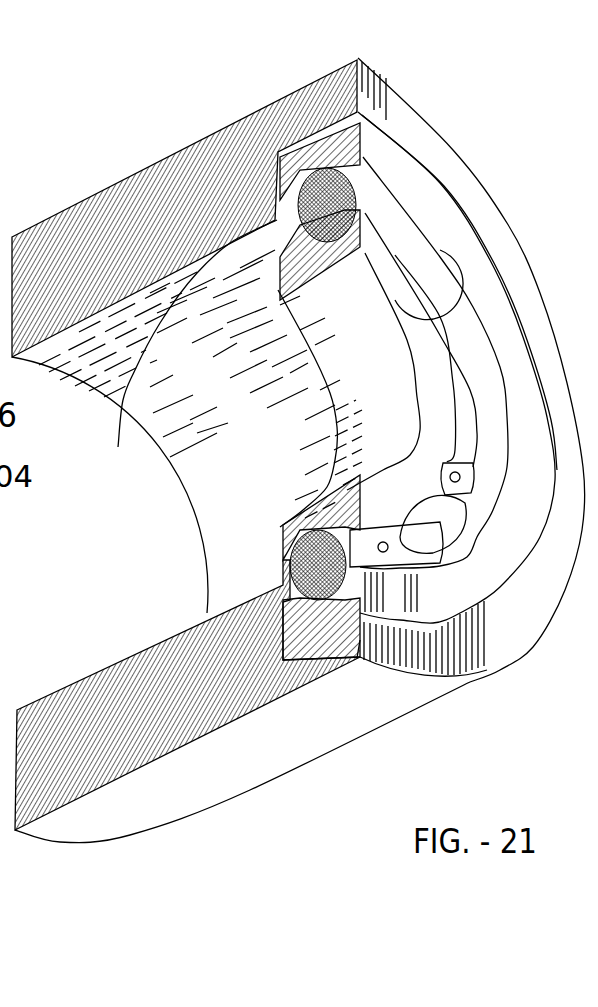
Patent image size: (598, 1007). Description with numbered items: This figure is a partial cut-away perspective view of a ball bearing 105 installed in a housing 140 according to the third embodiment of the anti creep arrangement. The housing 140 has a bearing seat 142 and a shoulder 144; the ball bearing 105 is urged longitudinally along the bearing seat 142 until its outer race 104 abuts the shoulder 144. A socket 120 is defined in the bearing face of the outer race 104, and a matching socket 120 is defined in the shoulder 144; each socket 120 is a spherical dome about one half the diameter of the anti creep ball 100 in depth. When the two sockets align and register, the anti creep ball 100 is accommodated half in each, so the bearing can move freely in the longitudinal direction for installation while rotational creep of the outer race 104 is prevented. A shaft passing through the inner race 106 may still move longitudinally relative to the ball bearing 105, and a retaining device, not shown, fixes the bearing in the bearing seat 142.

The anti creep ball 100 is at (285, 700).
The outer race 104 is at (268, 106).
The ball bearing 105 is at (448, 240).
The inner race 106 is at (290, 540).
The socket 120 is at (21, 531).
The housing 140 is at (150, 797).
The bearing seat 142 is at (357, 658).
The shoulder 144 is at (200, 373).